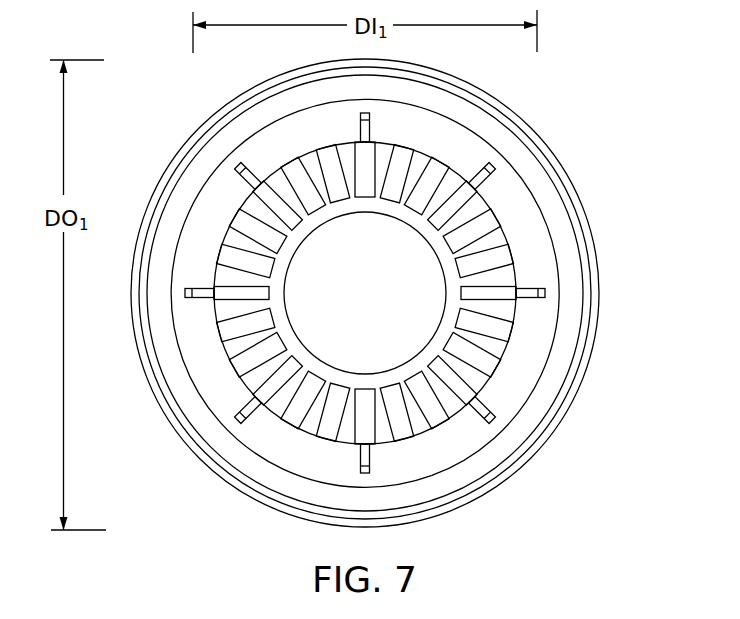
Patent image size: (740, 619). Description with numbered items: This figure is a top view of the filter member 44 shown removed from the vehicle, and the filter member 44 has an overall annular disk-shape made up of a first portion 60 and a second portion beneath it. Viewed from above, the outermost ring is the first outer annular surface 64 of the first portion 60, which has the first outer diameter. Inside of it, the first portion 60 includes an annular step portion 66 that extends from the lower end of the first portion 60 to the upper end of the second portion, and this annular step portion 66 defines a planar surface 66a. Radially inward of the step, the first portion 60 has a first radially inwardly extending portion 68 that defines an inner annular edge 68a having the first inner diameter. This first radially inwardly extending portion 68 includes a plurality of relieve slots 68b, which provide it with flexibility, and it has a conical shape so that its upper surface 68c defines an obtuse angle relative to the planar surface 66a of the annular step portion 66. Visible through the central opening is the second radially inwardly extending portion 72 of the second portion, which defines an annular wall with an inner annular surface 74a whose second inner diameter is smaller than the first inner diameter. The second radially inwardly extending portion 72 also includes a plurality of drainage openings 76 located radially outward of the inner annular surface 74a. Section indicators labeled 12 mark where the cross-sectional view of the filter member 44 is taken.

The filter member 44 is at (596, 43).
The first outer annular surface 64 is at (520, 110).
The first portion 60 is at (591, 200).
The annular step portion 66 is at (572, 267).
The planar surface 66a is at (497, 440).
The first radially inwardly extending portion 68 is at (505, 352).
The inner annular edge 68a is at (318, 150).
The relieve slots 68b is at (368, 136).
The upper surface 68c is at (280, 448).
The second radially inwardly extending portion 72 is at (427, 342).
The inner annular surface 74a is at (284, 303).
The drainage openings 76 is at (268, 226).
The section view indicator 12 is at (118, 324).